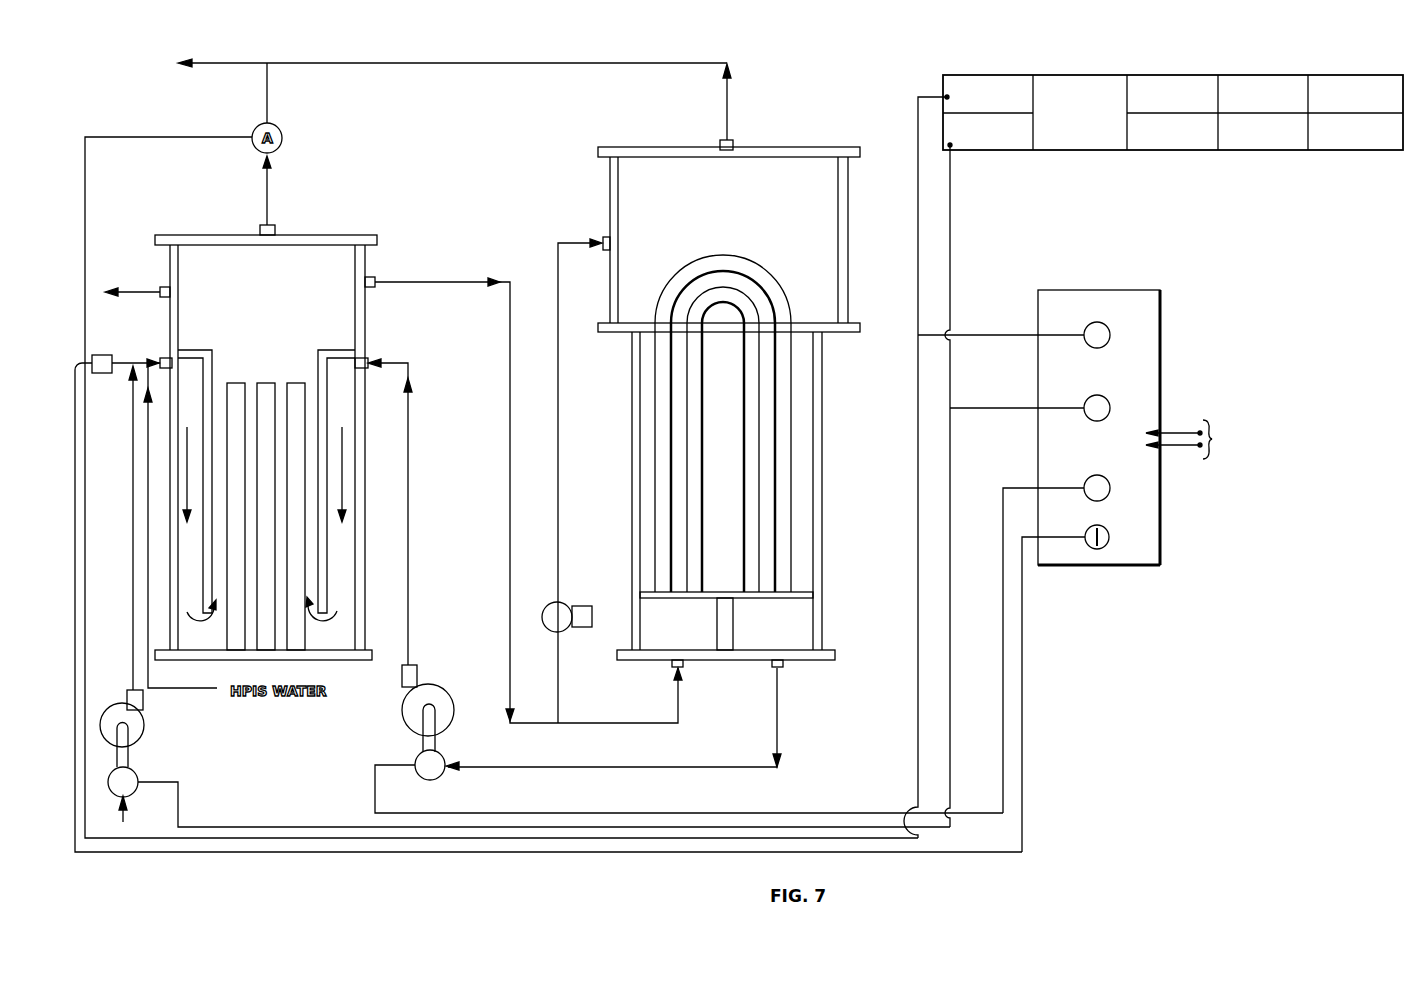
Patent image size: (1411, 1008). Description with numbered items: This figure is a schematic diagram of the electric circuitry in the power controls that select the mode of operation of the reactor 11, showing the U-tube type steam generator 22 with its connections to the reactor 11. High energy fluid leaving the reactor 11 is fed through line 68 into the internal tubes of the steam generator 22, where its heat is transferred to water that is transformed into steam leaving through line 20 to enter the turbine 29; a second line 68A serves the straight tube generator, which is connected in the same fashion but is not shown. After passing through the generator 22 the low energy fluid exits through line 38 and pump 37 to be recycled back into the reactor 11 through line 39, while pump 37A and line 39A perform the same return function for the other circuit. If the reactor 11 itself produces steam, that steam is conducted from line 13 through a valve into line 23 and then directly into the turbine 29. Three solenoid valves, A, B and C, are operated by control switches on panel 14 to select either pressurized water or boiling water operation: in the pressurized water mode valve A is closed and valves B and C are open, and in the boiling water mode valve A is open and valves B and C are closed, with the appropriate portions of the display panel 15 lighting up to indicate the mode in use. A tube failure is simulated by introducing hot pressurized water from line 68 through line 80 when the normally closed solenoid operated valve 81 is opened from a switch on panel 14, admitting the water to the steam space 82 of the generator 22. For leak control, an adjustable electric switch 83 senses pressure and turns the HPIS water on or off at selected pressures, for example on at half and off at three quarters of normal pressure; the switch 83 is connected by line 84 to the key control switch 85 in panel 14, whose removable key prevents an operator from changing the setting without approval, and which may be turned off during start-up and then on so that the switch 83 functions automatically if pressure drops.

The reactor 11 is at (338, 233).
The line 13 is at (267, 205).
The panel 14 is at (1179, 427).
The display panel 15 is at (1183, 62).
The line 20 is at (727, 125).
The steam generator 22 is at (848, 212).
The line 23 is at (415, 43).
The turbine 29 is at (107, 78).
The pump 37 is at (477, 678).
The pump 37A is at (137, 735).
The line 38 is at (655, 768).
The line 39 is at (408, 527).
The line 39A is at (132, 540).
The line 68 is at (412, 281).
The line 68A is at (148, 290).
The line 80 is at (558, 688).
The solenoid operated valve 81 is at (568, 603).
The steam space 82 is at (741, 214).
The electric switch 83 is at (100, 355).
The line 84 is at (438, 853).
The key control switch 85 is at (1112, 538).